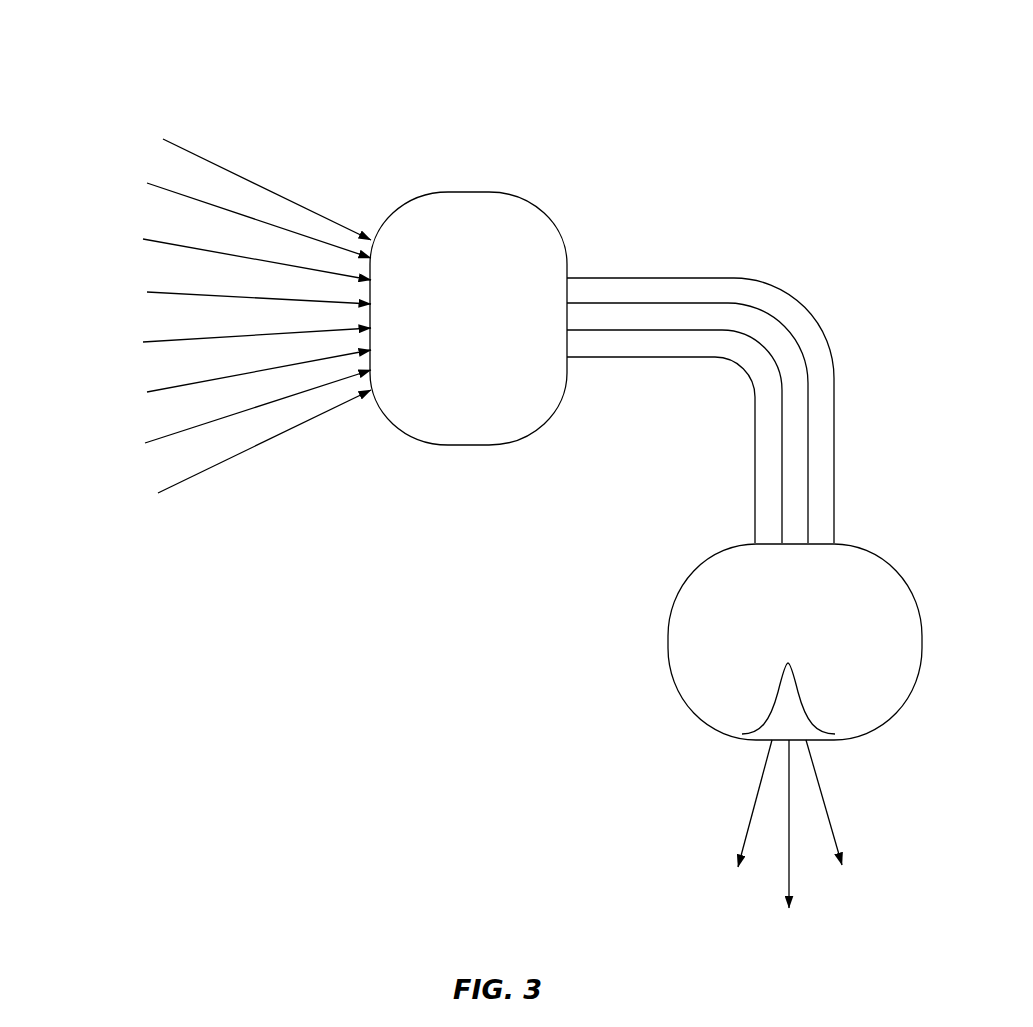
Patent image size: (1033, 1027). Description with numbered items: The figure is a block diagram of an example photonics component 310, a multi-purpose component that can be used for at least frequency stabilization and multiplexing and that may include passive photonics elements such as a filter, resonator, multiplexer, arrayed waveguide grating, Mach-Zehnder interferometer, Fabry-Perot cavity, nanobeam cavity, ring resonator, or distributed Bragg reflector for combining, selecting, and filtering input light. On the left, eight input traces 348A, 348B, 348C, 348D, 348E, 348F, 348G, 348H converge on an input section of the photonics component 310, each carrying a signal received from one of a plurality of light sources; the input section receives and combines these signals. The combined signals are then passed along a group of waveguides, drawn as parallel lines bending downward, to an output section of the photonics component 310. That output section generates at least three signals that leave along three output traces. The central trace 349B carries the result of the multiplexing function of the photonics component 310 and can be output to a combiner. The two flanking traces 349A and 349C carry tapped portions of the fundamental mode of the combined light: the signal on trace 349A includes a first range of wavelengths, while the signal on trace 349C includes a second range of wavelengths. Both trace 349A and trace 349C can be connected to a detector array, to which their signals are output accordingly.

The photonics component 310 is at (245, 53).
The trace 348A is at (163, 140).
The trace 348B is at (148, 184).
The trace 348C is at (145, 240).
The trace 348D is at (148, 292).
The trace 348E is at (145, 342).
The trace 348F is at (148, 392).
The trace 348G is at (146, 443).
The trace 348H is at (158, 493).
The trace 349A is at (746, 838).
The trace 349B is at (791, 888).
The trace 349C is at (821, 790).